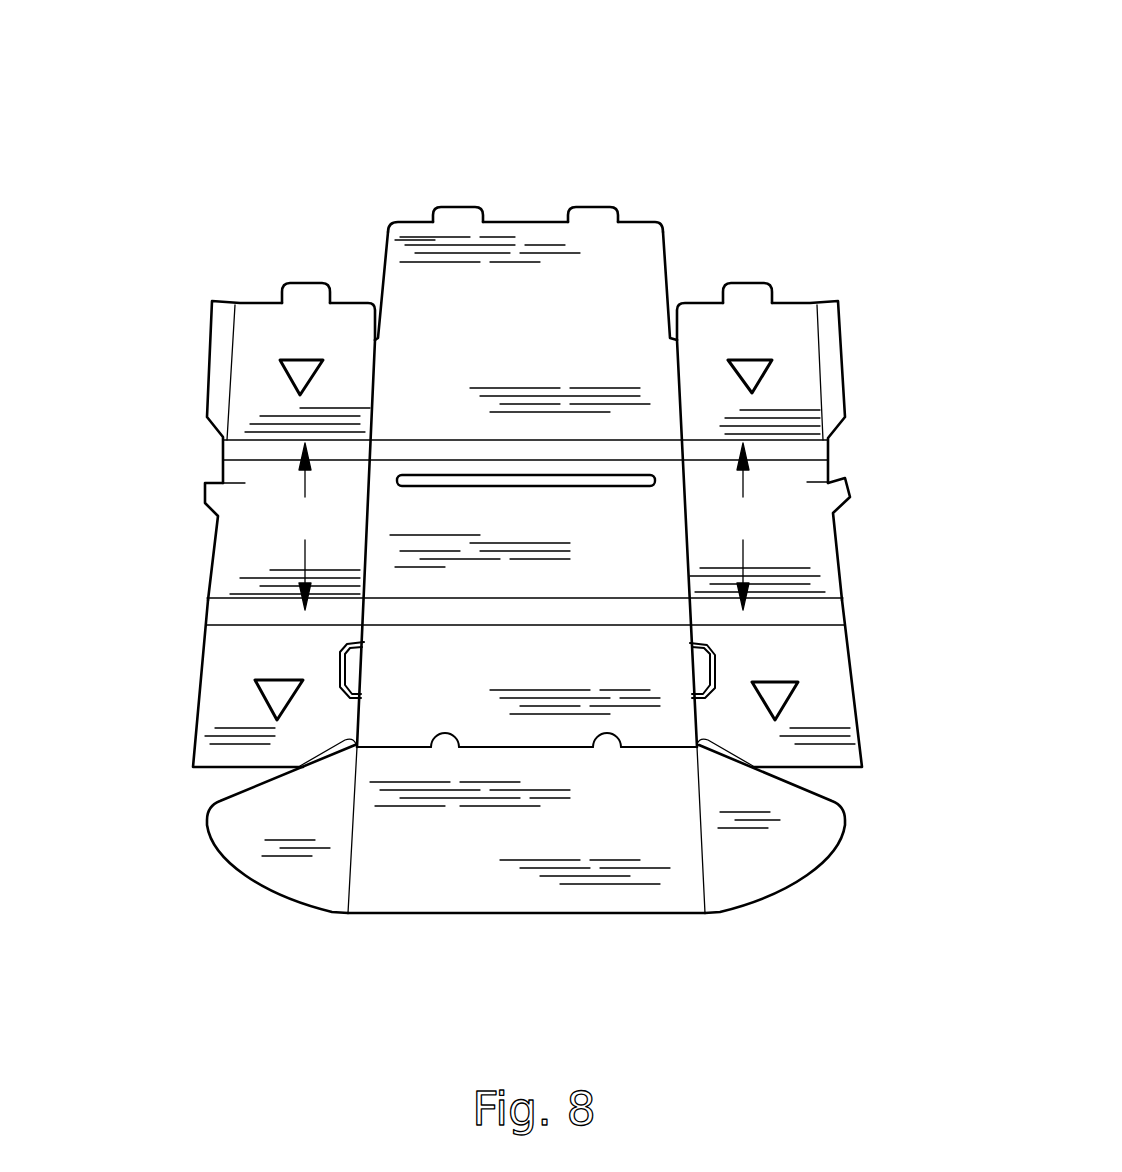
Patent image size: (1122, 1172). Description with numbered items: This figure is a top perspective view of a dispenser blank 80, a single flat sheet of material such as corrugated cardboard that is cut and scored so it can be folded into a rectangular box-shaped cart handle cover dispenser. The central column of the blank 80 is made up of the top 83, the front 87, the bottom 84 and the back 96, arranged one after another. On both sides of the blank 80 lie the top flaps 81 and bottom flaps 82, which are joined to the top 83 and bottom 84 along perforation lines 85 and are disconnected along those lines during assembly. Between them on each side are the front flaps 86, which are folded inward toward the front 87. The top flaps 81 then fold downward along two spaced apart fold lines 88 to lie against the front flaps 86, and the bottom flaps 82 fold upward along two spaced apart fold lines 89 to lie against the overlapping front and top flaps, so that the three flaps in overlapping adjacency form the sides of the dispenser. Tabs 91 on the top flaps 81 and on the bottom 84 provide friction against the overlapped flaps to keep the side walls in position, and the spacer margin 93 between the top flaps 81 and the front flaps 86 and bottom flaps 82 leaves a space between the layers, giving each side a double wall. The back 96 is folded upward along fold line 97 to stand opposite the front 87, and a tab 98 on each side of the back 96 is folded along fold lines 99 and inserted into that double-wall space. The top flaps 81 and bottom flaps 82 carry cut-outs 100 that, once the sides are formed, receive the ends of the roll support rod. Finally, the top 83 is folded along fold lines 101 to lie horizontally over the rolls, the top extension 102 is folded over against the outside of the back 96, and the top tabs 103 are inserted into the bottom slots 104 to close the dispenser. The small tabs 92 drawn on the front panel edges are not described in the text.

The dispenser blank 80 is at (747, 91).
The top flaps 81 is at (247, 400).
The bottom flaps 82 is at (193, 742).
The top 83 is at (577, 383).
The bottom 84 is at (603, 640).
The perforation lines 85 is at (680, 363).
The front flaps 86 is at (230, 533).
The front 87 is at (668, 505).
The fold lines 88 is at (247, 462).
The fold lines 89 is at (210, 622).
The tabs 91 is at (305, 290).
The locking tab 92 is at (350, 680).
The spacer margin 93 is at (292, 530).
The back 96 is at (383, 902).
The fold line 97 is at (552, 752).
The tab 98 is at (258, 868).
The fold lines 99 is at (347, 880).
The cut-outs 100 is at (283, 378).
The fold lines 101 is at (498, 440).
The top extension 102 is at (635, 235).
The top tabs 103 is at (457, 210).
The bottom slots 104 is at (447, 750).